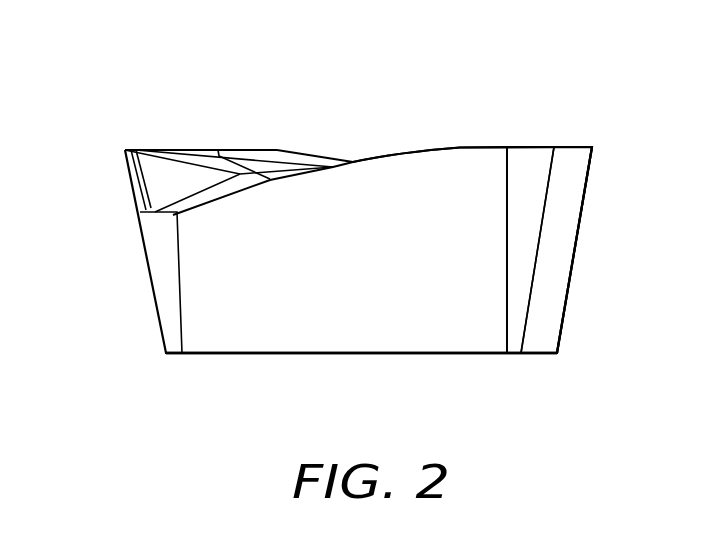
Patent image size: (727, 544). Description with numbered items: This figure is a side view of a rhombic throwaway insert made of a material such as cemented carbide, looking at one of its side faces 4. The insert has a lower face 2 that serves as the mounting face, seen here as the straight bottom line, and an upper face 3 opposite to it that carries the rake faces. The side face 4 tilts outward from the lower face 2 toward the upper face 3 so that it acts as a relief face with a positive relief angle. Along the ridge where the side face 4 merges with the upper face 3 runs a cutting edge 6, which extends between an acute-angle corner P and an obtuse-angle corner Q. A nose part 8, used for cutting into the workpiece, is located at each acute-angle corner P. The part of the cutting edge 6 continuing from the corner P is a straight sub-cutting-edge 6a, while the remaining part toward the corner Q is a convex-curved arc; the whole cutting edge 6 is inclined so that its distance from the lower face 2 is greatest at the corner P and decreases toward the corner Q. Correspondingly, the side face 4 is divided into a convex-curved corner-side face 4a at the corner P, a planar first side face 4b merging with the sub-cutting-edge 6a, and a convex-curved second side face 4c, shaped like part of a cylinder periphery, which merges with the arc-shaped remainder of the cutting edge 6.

The lower face 2 is at (475, 354).
The upper face 3 is at (412, 142).
The side face 4 is at (261, 323).
The corner-side face 4a is at (557, 287).
The first side face 4b is at (535, 200).
The second side face 4c is at (425, 332).
The cutting edge 6 is at (458, 147).
The sub-cutting-edge 6a is at (527, 147).
The nose part 8 is at (128, 157).
The corner P is at (125, 150).
The corner Q is at (145, 218).